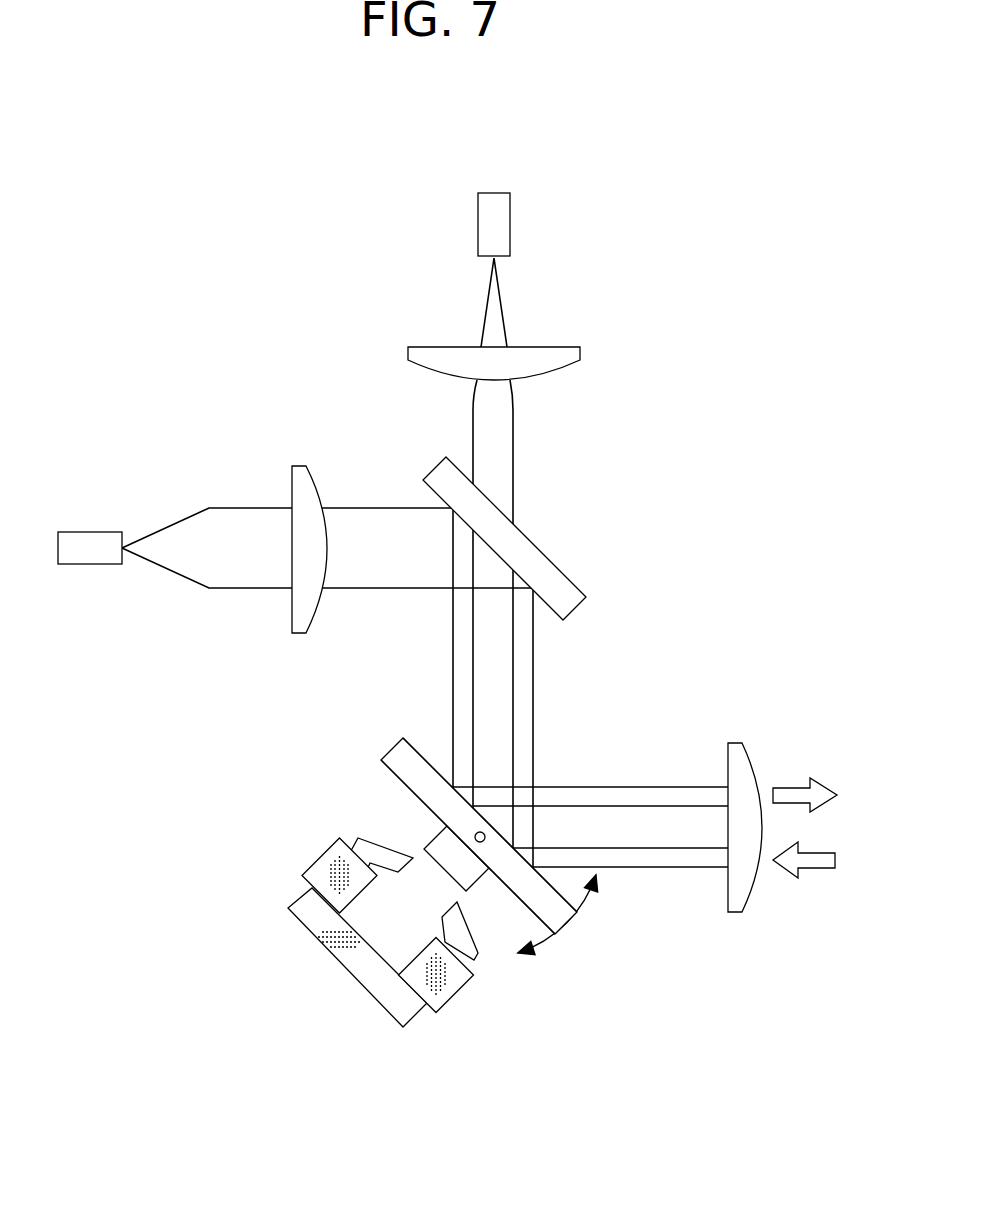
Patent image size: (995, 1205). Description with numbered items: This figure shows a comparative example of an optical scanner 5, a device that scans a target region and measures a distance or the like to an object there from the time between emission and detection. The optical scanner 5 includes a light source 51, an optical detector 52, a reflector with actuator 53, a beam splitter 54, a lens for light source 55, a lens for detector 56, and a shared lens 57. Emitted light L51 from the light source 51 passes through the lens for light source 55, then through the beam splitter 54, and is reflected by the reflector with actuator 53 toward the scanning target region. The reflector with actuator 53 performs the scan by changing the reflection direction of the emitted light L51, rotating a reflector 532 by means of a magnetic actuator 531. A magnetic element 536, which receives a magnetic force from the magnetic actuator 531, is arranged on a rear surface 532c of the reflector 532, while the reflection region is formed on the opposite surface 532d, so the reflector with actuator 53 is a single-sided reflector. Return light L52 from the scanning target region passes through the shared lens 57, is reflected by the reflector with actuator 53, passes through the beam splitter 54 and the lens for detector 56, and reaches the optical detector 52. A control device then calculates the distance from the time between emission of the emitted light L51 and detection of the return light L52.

The optical scanner 5 is at (289, 199).
The light source 51 is at (90, 530).
The optical detector 52 is at (511, 228).
The reflector with actuator 53 is at (278, 826).
The magnetic actuator 531 is at (352, 963).
The reflector 532 is at (380, 740).
The rear surface 532c is at (390, 773).
The surface 532d is at (432, 757).
The magnetic element 536 is at (435, 845).
The beam splitter 54 is at (575, 583).
The lens for light source 55 is at (300, 465).
The lens for detector 56 is at (580, 355).
The shared lens 57 is at (733, 742).
The emitted light L51 is at (232, 507).
The return light L52 is at (505, 302).